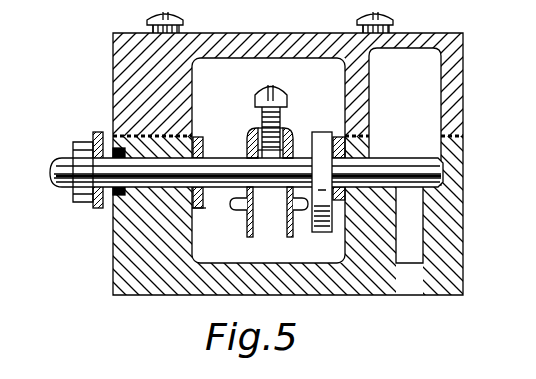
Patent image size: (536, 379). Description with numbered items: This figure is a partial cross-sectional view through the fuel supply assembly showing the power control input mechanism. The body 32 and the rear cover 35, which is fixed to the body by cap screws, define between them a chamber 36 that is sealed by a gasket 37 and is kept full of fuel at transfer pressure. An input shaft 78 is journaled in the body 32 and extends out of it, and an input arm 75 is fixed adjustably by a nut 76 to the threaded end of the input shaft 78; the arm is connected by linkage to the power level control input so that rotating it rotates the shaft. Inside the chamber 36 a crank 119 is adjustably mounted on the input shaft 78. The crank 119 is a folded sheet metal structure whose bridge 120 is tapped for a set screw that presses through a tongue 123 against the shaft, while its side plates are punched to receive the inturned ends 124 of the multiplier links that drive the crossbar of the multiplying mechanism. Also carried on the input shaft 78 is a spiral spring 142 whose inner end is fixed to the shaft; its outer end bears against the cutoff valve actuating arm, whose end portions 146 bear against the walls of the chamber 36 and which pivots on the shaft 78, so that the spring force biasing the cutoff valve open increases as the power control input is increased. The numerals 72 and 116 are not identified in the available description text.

The body 32 is at (121, 272).
The rear cover 35 is at (137, 58).
The chamber 36 is at (283, 66).
The gasket 37 is at (470, 129).
The nut 72 is at (48, 173).
The input arm 75 is at (95, 212).
The nut 76 is at (113, 134).
The input shaft 78 is at (247, 140).
The pin 116 is at (249, 222).
The crank 119 is at (291, 126).
The bridge 120 is at (255, 126).
The tongue 123 is at (288, 206).
The inturned ends 124 is at (263, 190).
The spiral spring 142 is at (313, 226).
The end portions 146 is at (343, 142).